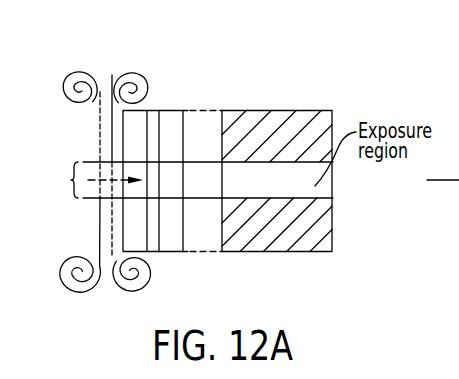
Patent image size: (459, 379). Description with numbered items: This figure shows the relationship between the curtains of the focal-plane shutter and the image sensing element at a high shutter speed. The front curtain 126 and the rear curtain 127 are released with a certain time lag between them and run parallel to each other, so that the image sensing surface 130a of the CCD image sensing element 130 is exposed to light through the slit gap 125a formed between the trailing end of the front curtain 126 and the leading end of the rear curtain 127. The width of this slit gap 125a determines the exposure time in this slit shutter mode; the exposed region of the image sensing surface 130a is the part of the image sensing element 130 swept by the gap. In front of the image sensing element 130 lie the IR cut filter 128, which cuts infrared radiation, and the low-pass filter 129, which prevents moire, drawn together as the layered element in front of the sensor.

The slit gap 125a is at (180, 180).
The front curtain 126 is at (99, 142).
The rear curtain 127 is at (112, 75).
The IR cut filter 128 is at (171, 155).
The low-pass filter 129 is at (137, 116).
The CCD image sensing element 130 is at (278, 175).
The image sensing surface 130a is at (317, 231).